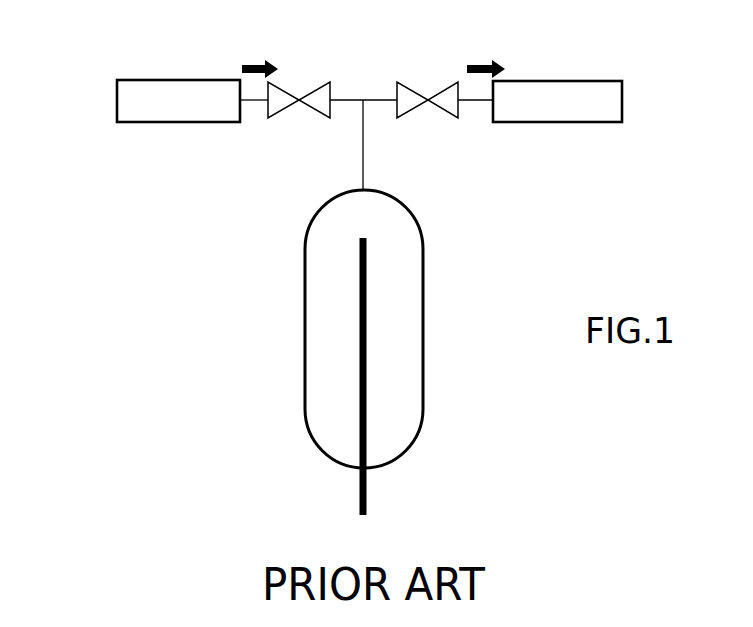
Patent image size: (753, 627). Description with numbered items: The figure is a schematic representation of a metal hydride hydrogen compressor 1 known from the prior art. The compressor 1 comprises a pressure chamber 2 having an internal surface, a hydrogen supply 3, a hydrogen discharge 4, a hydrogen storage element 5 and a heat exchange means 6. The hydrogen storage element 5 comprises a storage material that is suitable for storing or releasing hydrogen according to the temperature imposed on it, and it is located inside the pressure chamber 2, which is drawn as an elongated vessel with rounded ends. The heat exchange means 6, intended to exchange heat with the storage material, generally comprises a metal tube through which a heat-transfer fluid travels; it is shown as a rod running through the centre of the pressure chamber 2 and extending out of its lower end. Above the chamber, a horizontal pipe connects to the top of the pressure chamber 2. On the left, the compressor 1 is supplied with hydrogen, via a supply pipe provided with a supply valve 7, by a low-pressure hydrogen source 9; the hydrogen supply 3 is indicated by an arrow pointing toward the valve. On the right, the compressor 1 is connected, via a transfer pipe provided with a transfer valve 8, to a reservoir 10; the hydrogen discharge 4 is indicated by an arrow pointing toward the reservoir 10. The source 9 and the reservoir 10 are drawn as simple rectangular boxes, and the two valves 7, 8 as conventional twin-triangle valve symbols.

The metal hydride hydrogen compressor 1 is at (160, 48).
The pressure chamber 2 is at (305, 318).
The hydrogen supply 3 is at (260, 59).
The hydrogen discharge 4 is at (486, 59).
The hydrogen storage element 5 is at (328, 372).
The heat exchange means 6 is at (358, 257).
The supply valve 7 is at (302, 93).
The transfer valve 8 is at (430, 93).
The low-pressure hydrogen source 9 is at (117, 100).
The reservoir 10 is at (622, 100).